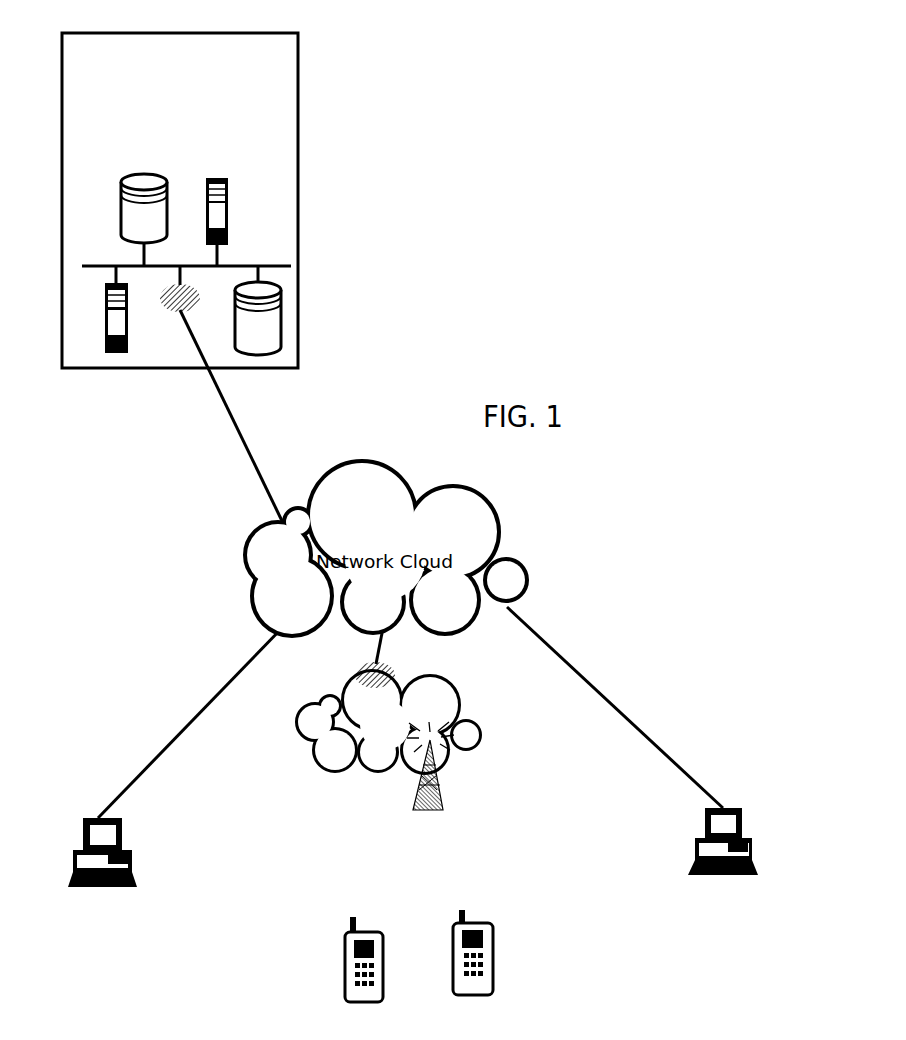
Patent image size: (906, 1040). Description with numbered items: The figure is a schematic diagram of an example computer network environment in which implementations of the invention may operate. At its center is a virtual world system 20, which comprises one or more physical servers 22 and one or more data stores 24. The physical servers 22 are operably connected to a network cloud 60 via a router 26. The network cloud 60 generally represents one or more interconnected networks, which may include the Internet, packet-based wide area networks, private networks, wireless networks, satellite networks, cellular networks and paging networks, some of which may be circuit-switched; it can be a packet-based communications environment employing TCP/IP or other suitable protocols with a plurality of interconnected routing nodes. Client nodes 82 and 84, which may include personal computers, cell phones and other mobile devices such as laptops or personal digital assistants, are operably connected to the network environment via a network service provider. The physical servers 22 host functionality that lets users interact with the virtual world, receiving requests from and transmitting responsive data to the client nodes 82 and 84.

The virtual world system 20 is at (298, 116).
The physical server 22 is at (228, 213).
The data store 24 is at (121, 208).
The router 26 is at (163, 300).
The network cloud 60 is at (266, 701).
The client node 82 is at (73, 855).
The client node 84 is at (340, 962).